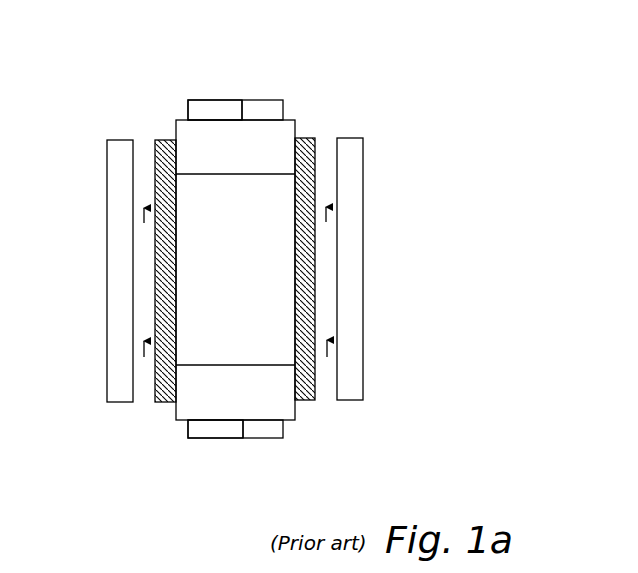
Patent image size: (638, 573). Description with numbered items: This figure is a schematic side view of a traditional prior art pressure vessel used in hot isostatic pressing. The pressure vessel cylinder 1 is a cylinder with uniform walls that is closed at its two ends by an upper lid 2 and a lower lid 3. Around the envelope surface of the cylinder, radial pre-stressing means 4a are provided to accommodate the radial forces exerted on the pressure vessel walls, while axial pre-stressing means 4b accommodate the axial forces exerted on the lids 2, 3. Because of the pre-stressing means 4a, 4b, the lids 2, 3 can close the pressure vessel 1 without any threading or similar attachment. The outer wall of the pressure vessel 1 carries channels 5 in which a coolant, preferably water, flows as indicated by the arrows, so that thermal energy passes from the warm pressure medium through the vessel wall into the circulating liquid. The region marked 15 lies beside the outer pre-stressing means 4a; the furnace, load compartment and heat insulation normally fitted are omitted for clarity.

The pressure vessel cylinder 1 is at (302, 138).
The upper lid 2 is at (242, 100).
The lower lid 3 is at (243, 440).
The radial pre-stressing means 4a is at (118, 193).
The axial pre-stressing means 4b is at (200, 100).
The channels 5 is at (153, 139).
The gap 15 is at (328, 370).